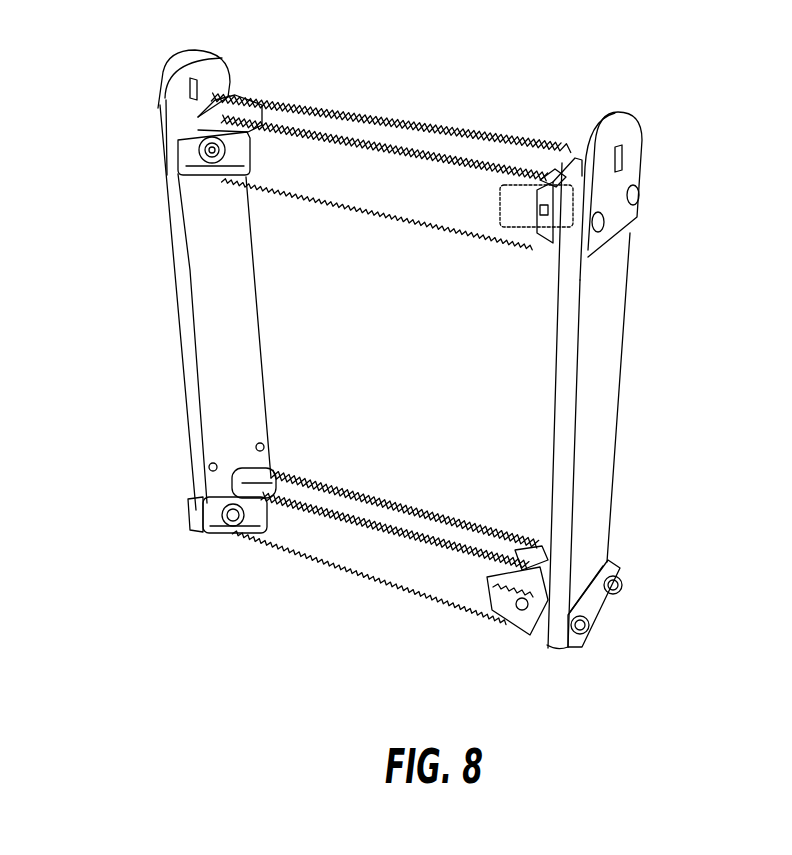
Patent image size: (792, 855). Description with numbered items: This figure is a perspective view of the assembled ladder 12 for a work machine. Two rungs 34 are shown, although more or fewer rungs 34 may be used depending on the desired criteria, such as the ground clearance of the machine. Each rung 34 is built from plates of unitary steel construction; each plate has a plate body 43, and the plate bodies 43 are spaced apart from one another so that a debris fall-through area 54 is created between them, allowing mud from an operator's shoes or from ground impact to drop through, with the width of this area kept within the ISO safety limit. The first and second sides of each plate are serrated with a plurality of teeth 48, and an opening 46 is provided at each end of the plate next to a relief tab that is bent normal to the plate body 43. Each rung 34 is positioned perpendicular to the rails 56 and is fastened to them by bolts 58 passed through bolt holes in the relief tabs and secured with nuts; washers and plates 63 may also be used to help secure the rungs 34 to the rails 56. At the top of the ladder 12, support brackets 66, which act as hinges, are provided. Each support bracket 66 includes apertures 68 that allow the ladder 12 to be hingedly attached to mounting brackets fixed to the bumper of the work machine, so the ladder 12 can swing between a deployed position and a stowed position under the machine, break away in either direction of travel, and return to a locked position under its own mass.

The ladder 12 is at (684, 437).
The rung 34 is at (397, 101).
The plate body 43 is at (388, 195).
The opening 46 is at (251, 156).
The teeth 48 is at (267, 120).
The debris fall-through area 54 is at (482, 148).
The rails 56 is at (180, 328).
The bolts 58 is at (227, 162).
The plates 63 is at (198, 510).
The support brackets 66 is at (158, 93).
The apertures 68 is at (205, 88).